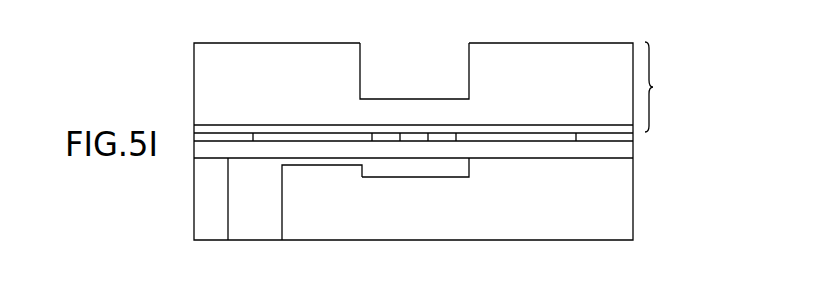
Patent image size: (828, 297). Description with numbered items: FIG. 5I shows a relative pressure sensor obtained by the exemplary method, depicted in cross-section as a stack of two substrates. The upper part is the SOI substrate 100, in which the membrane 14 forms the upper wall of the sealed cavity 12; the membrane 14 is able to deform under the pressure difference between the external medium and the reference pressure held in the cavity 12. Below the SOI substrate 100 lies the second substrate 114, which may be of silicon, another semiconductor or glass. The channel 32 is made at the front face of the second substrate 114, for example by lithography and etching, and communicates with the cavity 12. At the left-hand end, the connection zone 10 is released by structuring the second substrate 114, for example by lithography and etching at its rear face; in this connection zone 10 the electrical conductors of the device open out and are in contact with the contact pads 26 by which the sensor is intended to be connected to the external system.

The SOI substrate 100 is at (442, 87).
The membrane 14 is at (409, 112).
The contact pads 26 is at (254, 150).
The second substrate 114 is at (621, 209).
The channel 32 is at (337, 165).
The sealed cavity 12 is at (403, 165).
The connection zone 10 is at (259, 222).